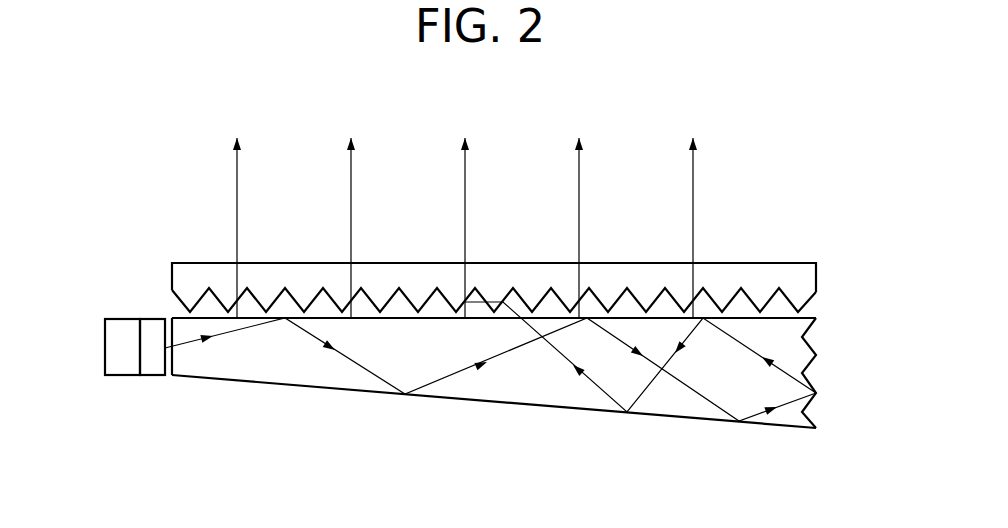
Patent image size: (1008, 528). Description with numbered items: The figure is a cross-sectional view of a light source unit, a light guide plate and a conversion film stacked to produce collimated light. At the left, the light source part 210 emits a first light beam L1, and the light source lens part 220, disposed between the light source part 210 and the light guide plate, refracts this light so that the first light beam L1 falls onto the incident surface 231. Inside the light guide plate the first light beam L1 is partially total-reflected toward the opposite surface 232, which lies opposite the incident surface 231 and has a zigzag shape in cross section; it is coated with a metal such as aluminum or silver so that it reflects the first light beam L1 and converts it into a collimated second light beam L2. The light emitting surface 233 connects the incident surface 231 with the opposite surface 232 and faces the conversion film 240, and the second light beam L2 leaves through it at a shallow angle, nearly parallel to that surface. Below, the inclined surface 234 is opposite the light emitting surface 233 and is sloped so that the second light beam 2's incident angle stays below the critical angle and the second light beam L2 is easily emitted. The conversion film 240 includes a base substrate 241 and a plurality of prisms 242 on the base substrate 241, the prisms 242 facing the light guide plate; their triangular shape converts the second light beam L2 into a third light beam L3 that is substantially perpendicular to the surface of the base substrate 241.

The light source part 210 is at (120, 372).
The light source lens part 220 is at (150, 372).
The incident surface 231 is at (180, 368).
The opposite surface 232 is at (812, 342).
The light emitting surface 233 is at (778, 317).
The inclined surface 234 is at (780, 428).
The conversion film 240 is at (433, 276).
The base substrate 241 is at (174, 276).
The prisms 242 is at (182, 306).
The first light beam L1 is at (490, 369).
The second light beam L2 is at (640, 357).
The third light beam L3 is at (465, 228).